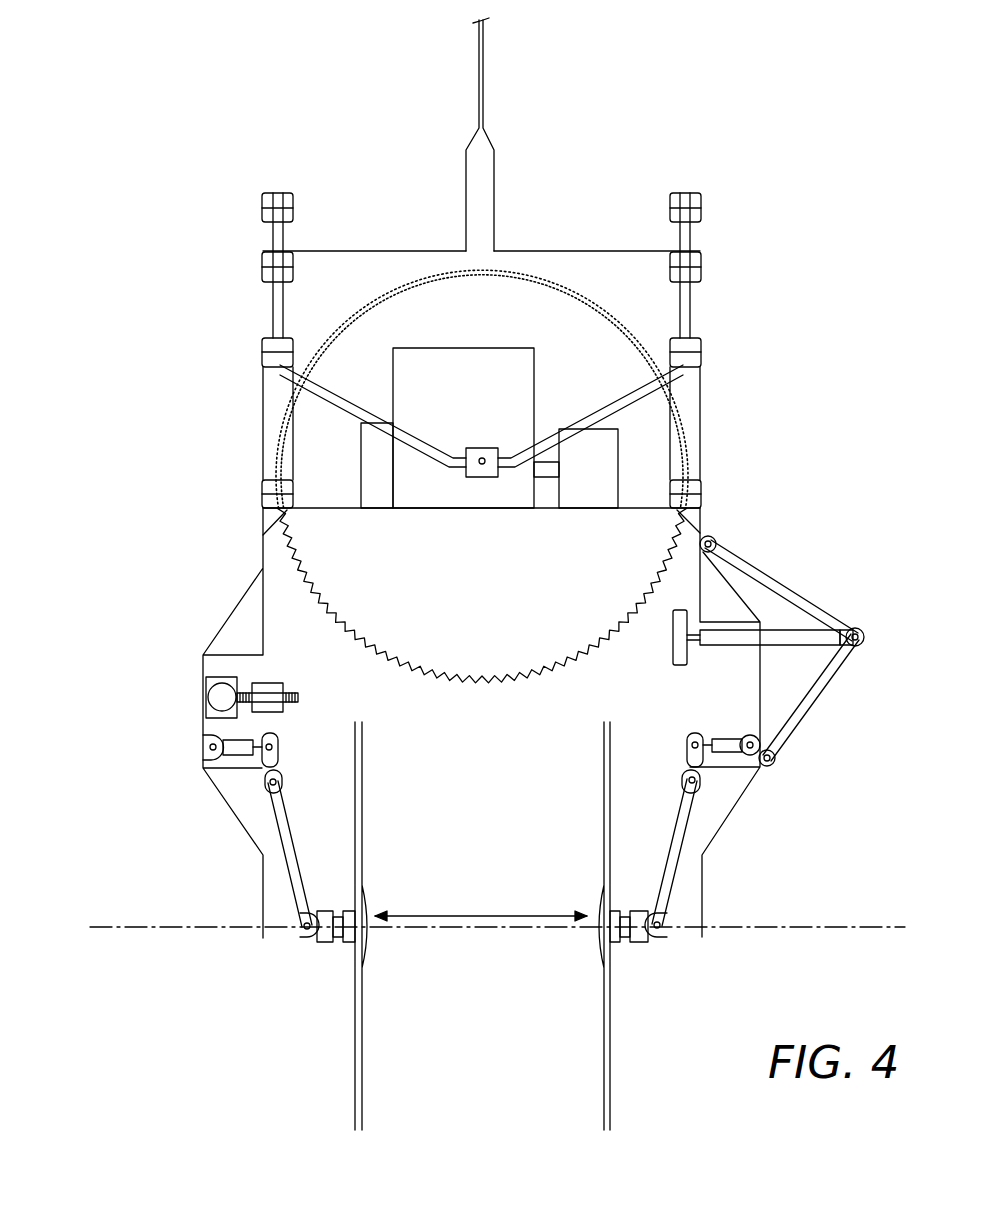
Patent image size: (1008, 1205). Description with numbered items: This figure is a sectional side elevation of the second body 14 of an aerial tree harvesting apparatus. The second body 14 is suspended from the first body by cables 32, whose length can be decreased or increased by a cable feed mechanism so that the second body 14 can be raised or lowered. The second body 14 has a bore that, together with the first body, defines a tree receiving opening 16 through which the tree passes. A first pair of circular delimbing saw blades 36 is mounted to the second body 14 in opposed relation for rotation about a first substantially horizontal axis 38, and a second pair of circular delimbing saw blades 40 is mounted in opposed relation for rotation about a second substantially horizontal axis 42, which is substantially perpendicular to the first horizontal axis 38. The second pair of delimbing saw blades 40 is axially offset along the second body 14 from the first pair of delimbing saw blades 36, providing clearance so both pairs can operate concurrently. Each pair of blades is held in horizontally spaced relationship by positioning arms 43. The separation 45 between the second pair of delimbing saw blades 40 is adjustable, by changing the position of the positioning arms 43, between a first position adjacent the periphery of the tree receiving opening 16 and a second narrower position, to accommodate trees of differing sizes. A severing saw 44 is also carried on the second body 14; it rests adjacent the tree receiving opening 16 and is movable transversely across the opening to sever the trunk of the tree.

The second body 14 is at (197, 317).
The tree receiving opening 16 is at (478, 840).
The cables 32 is at (483, 59).
The first pair of circular delimbing saw blades 36 is at (563, 660).
The first substantially horizontal axis 38 is at (487, 457).
The second pair of circular delimbing saw blades 40 is at (358, 1037).
The second substantially horizontal axis 42 is at (107, 927).
The positioning arms 43 is at (617, 398).
The severing saw 44 is at (290, 692).
The separation 45 is at (477, 917).